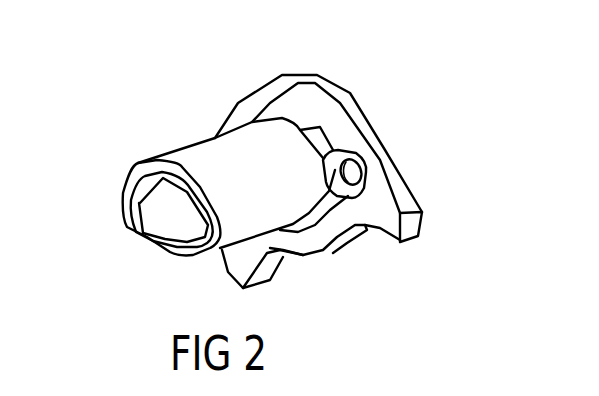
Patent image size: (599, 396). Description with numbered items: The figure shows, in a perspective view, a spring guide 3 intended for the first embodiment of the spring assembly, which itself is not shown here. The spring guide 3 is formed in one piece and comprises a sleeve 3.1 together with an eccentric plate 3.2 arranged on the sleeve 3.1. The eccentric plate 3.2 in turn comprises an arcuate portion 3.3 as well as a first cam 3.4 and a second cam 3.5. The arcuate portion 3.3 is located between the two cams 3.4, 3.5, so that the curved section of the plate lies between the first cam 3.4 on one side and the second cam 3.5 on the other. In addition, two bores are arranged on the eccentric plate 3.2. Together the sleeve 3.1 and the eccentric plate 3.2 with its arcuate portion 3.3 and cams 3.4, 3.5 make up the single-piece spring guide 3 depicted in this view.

The spring guide 3 is at (141, 119).
The sleeve 3.1 is at (143, 175).
The eccentric plate 3.2 is at (358, 76).
The arcuate portion 3.3 is at (333, 253).
The first cam 3.4 is at (420, 202).
The second cam 3.5 is at (240, 282).